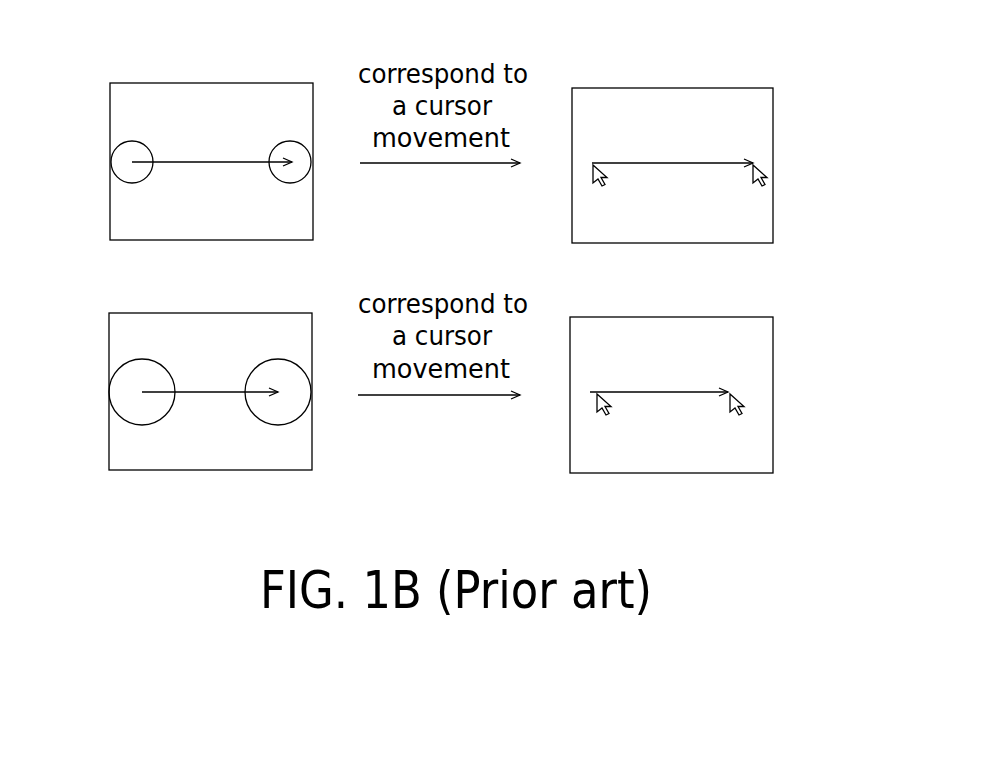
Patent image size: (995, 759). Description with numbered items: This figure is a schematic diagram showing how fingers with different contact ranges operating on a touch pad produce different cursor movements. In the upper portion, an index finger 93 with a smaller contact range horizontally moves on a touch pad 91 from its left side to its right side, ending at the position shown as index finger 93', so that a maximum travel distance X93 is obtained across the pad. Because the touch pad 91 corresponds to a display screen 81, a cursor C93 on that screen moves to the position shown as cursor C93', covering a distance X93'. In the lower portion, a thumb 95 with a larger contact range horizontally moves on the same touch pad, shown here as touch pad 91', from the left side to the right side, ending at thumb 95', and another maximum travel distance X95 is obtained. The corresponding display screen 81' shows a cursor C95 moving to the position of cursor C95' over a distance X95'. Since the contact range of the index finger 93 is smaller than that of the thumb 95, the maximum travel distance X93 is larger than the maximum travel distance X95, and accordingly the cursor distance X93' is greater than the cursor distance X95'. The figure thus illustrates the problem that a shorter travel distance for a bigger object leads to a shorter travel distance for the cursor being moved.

The touch pad 91 is at (173, 148).
The index finger 93 is at (148, 137).
The index finger 93' is at (273, 137).
The maximum travel distance X93 is at (212, 192).
The display screen 81 is at (714, 165).
The cursor C93 is at (599, 144).
The cursor C93' is at (733, 144).
The cursor movement distance X93' is at (672, 190).
The touch pad 91' is at (173, 391).
The thumb 95 is at (149, 371).
The thumb 95' is at (275, 371).
The maximum travel distance X95 is at (210, 422).
The display screen 81' is at (717, 395).
The cursor C95 is at (604, 371).
The cursor C95' is at (740, 371).
The cursor movement distance X95' is at (659, 422).